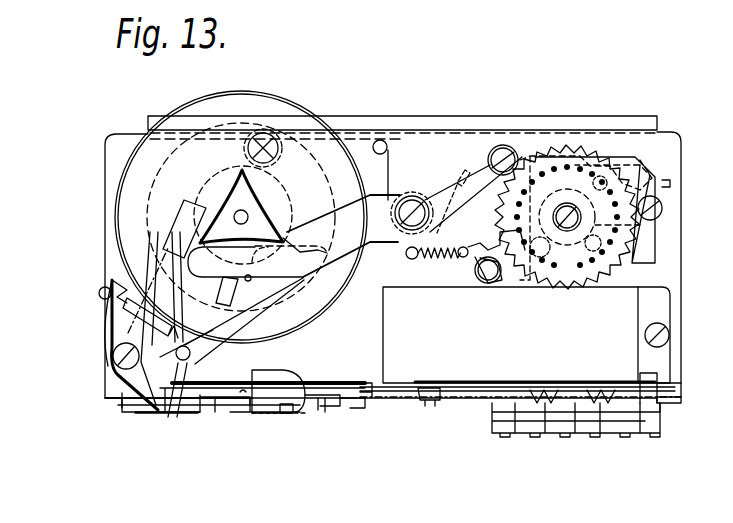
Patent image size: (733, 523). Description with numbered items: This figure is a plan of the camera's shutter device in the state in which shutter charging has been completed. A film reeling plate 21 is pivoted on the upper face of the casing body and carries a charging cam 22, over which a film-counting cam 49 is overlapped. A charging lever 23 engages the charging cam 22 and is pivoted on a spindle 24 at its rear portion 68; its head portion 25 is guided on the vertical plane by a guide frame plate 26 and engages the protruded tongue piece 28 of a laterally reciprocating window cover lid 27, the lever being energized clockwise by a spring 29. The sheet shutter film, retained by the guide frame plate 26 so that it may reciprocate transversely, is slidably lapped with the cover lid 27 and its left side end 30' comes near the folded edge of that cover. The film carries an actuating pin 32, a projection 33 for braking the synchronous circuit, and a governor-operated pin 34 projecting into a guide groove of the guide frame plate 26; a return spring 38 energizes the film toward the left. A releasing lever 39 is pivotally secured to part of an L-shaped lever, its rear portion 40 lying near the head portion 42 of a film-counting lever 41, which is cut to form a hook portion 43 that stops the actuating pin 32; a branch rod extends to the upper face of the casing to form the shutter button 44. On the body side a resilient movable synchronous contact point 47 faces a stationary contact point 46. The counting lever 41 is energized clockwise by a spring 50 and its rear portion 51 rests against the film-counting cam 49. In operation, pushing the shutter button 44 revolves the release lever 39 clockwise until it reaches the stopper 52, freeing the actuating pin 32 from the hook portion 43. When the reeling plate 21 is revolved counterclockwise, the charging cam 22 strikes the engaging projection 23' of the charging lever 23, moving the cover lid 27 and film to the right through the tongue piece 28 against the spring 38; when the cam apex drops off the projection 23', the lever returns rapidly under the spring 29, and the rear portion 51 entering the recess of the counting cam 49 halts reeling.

The film reeling plate 21 is at (183, 150).
The charging cam 22 is at (243, 135).
The charging lever 23 is at (353, 223).
The engaging projection 23' is at (120, 266).
The spindle 24 is at (272, 138).
The head portion 25 is at (176, 400).
The guide frame plate 26 is at (243, 402).
The window cover lid 27 is at (386, 398).
The protruded tongue piece 28 is at (165, 412).
The spring 29 is at (110, 365).
The left side end 30' is at (526, 385).
The actuating pin 32 is at (356, 393).
The projection for braking circuit 33 is at (332, 408).
The pin 34 is at (665, 415).
The return spring 38 is at (482, 398).
The releasing lever 39 is at (218, 405).
The rear portion 40 is at (140, 398).
The film-counting lever 41 is at (112, 275).
The head portion 42 is at (135, 412).
The hook portion 43 is at (318, 412).
The shutter button 44 is at (270, 395).
The stationary contact point 46 is at (147, 411).
The movable synchronous contact point 47 is at (221, 411).
The film-counting cam 49 is at (207, 200).
The spring 50 is at (105, 318).
The rear portion 51 is at (195, 233).
The stopper 52 is at (300, 411).
The rear portion 68 is at (313, 190).